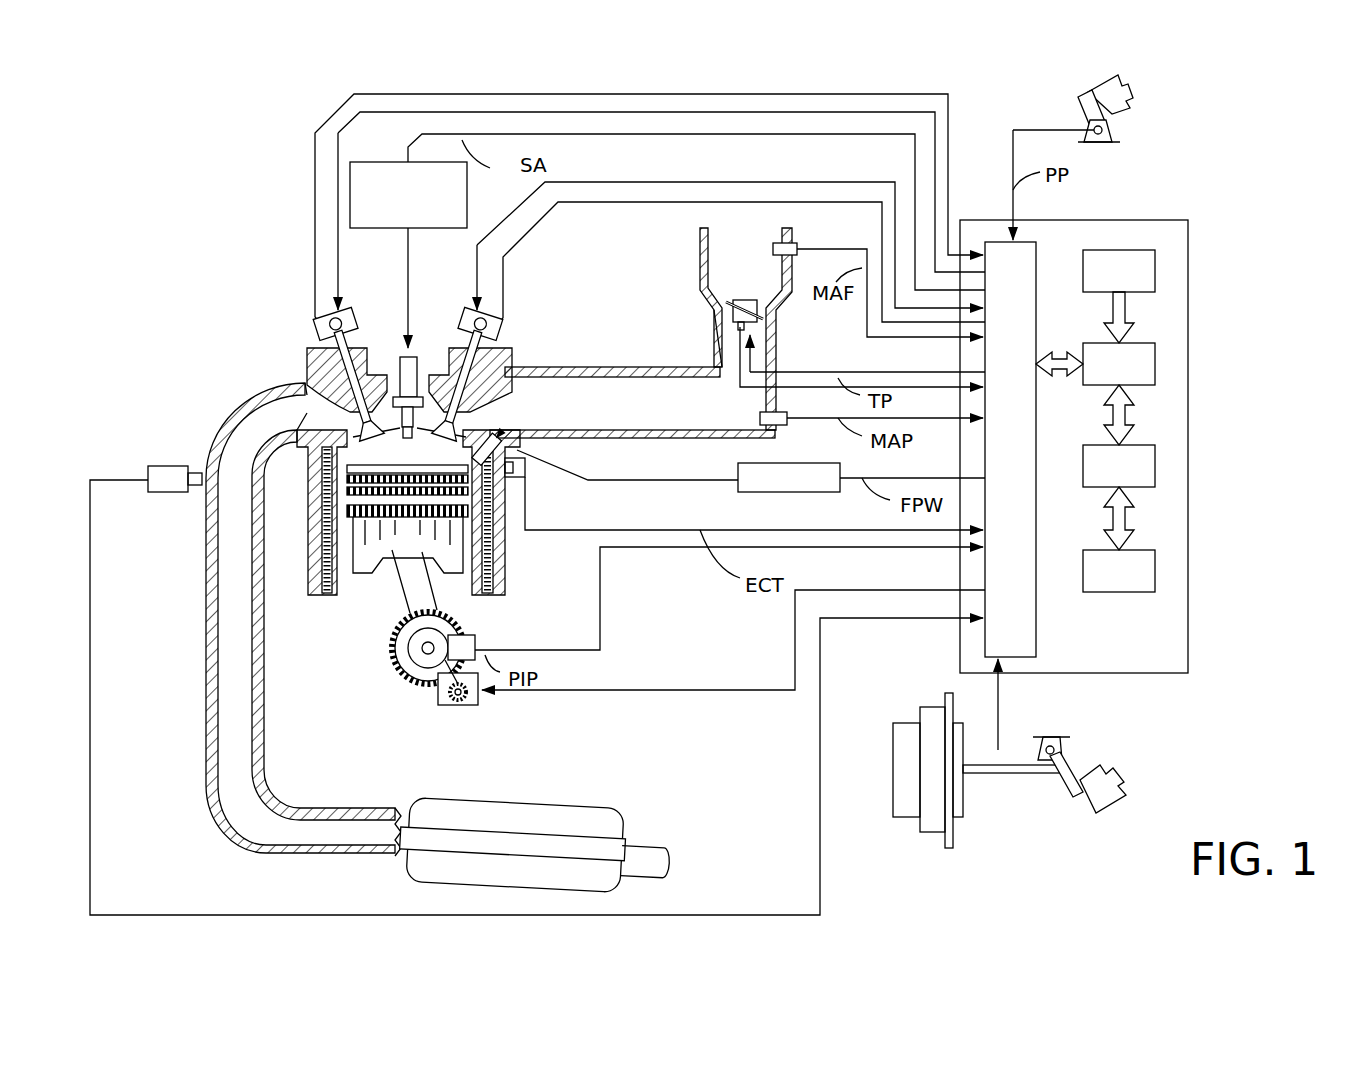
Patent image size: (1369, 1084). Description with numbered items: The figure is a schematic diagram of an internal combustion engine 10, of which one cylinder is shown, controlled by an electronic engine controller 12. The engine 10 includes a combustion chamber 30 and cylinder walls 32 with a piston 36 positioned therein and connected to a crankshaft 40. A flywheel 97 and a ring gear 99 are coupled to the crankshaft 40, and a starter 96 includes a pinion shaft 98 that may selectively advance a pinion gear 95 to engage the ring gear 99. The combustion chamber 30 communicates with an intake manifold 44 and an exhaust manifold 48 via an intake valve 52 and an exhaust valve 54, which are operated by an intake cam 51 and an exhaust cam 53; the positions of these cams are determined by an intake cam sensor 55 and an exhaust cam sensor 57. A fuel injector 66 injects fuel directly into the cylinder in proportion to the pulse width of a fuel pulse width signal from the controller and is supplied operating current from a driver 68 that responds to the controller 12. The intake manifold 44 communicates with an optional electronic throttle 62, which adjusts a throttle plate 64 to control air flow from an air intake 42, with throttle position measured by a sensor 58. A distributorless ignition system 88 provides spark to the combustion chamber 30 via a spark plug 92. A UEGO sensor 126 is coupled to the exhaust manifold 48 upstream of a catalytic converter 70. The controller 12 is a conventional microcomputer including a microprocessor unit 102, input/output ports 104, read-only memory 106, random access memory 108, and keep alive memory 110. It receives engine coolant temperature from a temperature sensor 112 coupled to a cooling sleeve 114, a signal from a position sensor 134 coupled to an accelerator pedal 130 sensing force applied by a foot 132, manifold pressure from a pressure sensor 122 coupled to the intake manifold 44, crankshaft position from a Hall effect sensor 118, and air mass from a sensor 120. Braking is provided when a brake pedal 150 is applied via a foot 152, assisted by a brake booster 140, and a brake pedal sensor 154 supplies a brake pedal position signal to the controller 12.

The internal combustion engine 10 is at (238, 300).
The electronic engine controller 12 is at (1183, 220).
The combustion chamber 30 is at (407, 448).
The cylinder walls 32 is at (340, 590).
The piston 36 is at (390, 548).
The crankshaft 40 is at (418, 678).
The air intake 42 is at (756, 275).
The intake manifold 44 is at (693, 415).
The exhaust manifold 48 is at (290, 418).
The intake cam 51 is at (470, 320).
The intake valve 52 is at (470, 410).
The exhaust cam 53 is at (346, 322).
The exhaust valve 54 is at (318, 392).
The intake cam sensor 55 is at (490, 335).
The exhaust cam sensor 57 is at (322, 332).
The throttle position sensor 58 is at (716, 330).
The electronic throttle 62 is at (757, 308).
The throttle plate 64 is at (728, 305).
The fuel injector 66 is at (517, 442).
The driver 68 is at (760, 493).
The catalytic converter 70 is at (428, 805).
The distributorless ignition system 88 is at (367, 162).
The spark plug 92 is at (416, 352).
The pinion gear 95 is at (462, 702).
The starter 96 is at (475, 705).
The flywheel 97 is at (400, 652).
The pinion shaft 98 is at (452, 700).
The ring gear 99 is at (425, 692).
The microprocessor unit 102 is at (1155, 360).
The input/output ports 104 is at (1036, 250).
The read-only memory 106 is at (1155, 268).
The random access memory 108 is at (1155, 462).
The keep alive memory 110 is at (1155, 565).
The temperature sensor 112 is at (520, 478).
The cooling sleeve 114 is at (495, 560).
The Hall effect sensor 118 is at (472, 636).
The air mass sensor 120 is at (790, 243).
The pressure sensor 122 is at (783, 425).
The Universal Exhaust Gas Oxygen (UEGO) sensor 126 is at (148, 470).
The accelerator pedal 130 is at (1080, 105).
The foot 132 is at (1130, 92).
The position sensor 134 is at (1118, 132).
The brake booster 140 is at (893, 812).
The brake pedal 150 is at (1076, 795).
The foot 152 is at (1104, 768).
The brake pedal sensor 154 is at (1046, 748).